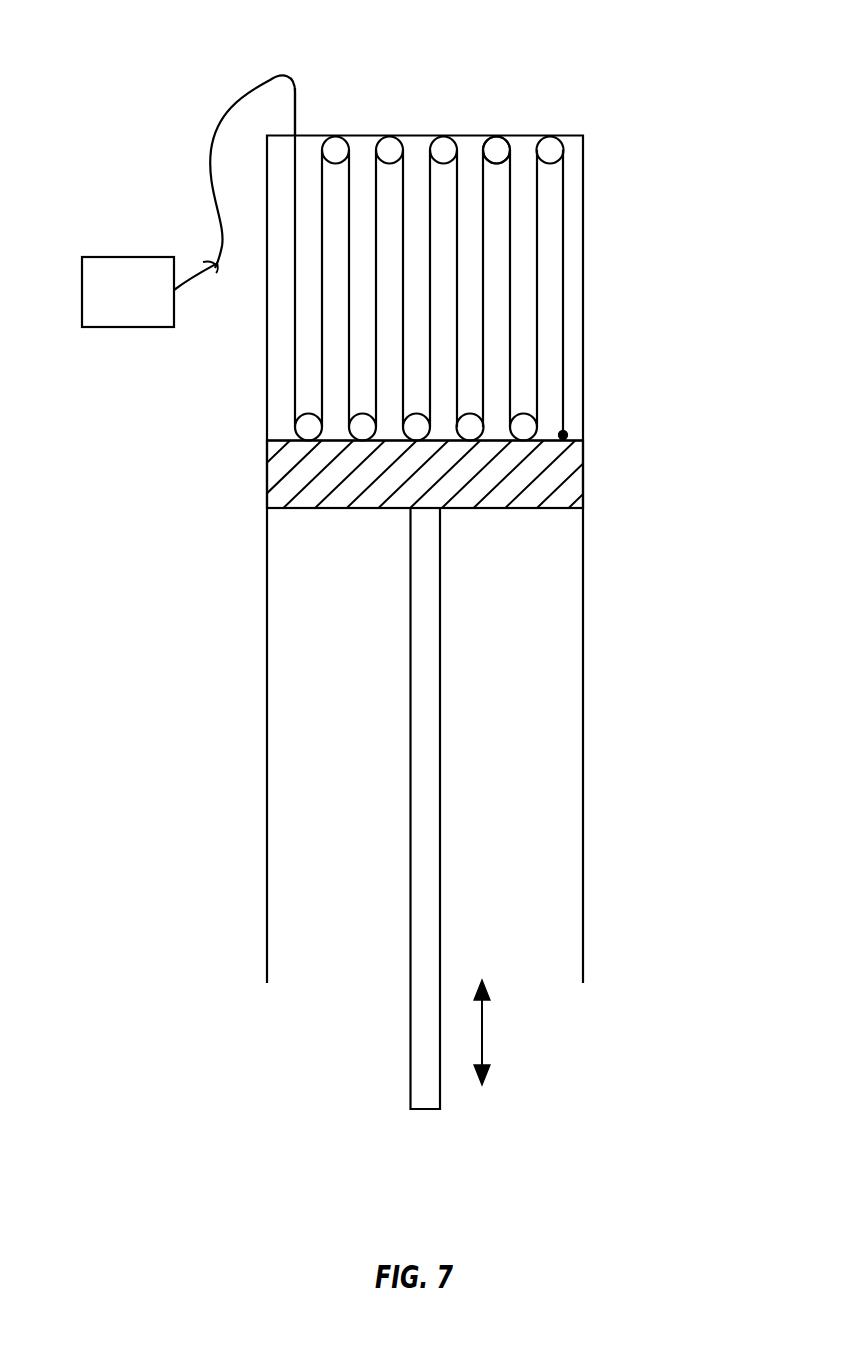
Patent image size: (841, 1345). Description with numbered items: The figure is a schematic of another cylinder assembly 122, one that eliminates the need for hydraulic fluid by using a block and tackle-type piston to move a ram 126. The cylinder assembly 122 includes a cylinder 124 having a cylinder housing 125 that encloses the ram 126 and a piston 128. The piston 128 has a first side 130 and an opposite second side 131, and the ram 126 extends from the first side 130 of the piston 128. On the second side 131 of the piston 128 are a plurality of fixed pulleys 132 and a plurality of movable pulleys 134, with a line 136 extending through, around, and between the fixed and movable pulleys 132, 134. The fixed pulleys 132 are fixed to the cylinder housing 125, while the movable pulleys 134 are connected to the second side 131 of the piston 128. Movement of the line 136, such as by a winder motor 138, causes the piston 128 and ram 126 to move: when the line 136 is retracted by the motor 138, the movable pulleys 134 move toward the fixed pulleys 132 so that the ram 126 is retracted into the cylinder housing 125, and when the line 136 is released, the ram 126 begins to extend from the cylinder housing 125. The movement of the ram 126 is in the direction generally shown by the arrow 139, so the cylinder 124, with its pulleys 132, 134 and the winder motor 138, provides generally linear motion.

The cylinder assembly 122 is at (615, 50).
The cylinder 124 is at (608, 273).
The cylinder housing 125 is at (583, 690).
The ram 126 is at (440, 780).
The piston 128 is at (488, 512).
The first side 130 is at (367, 510).
The second side 131 is at (342, 440).
The fixed pulleys 132 is at (375, 145).
The movable pulleys 134 is at (535, 418).
The line 136 is at (517, 161).
The winder motor 138 is at (100, 257).
The arrow 139 is at (483, 1028).